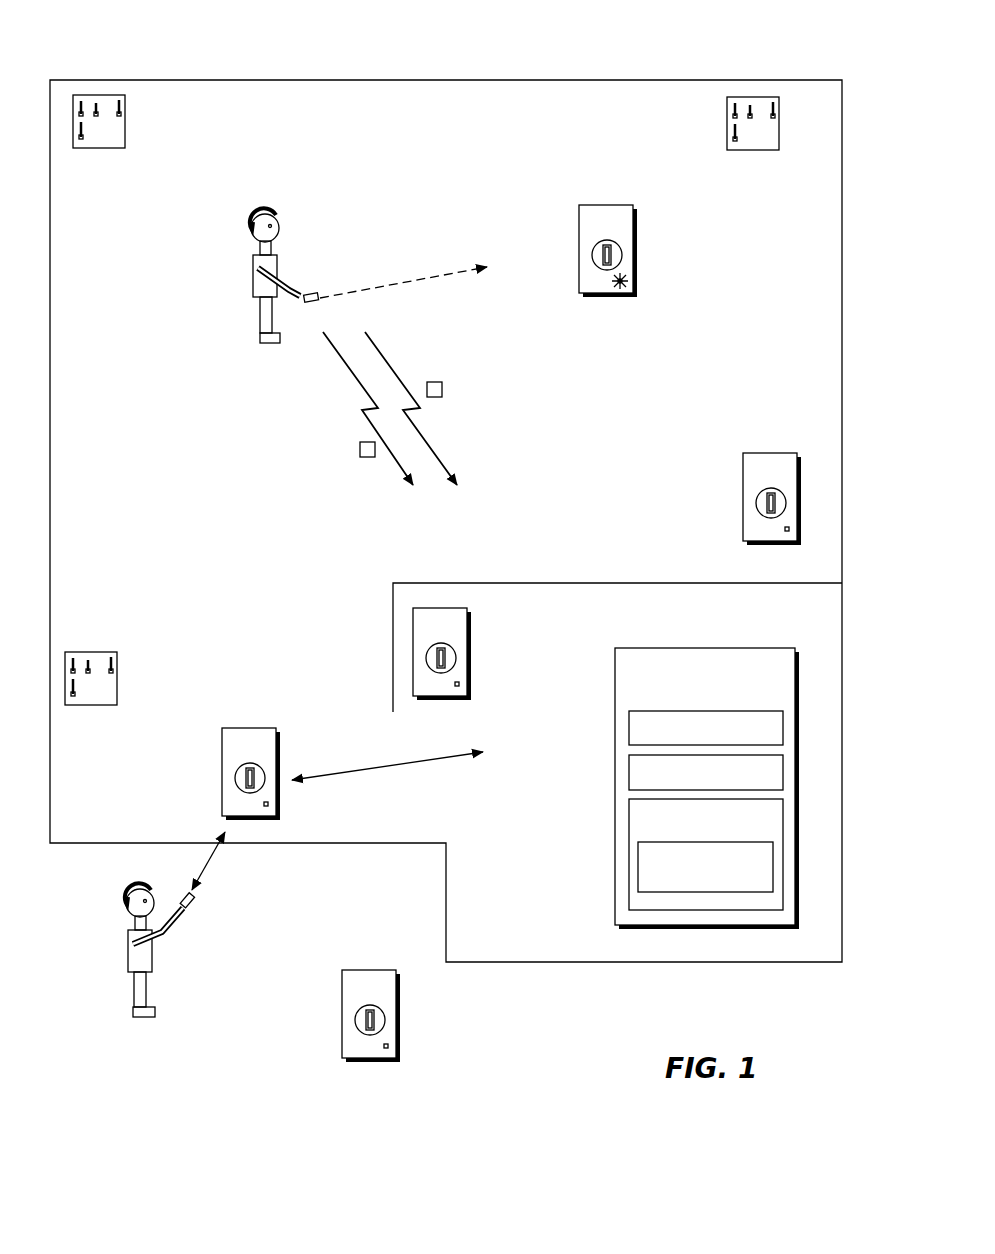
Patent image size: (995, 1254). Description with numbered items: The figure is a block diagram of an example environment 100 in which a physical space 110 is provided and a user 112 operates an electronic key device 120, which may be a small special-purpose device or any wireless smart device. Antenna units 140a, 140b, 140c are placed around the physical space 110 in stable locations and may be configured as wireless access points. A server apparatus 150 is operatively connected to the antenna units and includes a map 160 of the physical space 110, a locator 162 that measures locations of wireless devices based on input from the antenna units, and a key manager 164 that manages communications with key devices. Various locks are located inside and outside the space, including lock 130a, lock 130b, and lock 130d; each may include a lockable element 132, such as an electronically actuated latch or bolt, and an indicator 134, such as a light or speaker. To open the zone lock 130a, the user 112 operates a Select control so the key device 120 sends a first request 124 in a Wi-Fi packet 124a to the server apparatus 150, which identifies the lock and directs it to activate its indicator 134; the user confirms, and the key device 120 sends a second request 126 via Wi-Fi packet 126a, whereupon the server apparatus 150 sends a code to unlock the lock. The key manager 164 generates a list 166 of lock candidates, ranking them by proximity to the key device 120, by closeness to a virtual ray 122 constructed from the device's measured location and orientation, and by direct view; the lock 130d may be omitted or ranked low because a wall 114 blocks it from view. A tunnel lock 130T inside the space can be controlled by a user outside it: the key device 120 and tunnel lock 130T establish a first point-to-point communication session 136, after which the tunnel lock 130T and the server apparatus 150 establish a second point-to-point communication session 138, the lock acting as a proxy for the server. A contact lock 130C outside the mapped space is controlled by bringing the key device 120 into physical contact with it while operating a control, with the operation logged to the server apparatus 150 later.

The environment 100 is at (770, 58).
The physical space 110 is at (469, 124).
The user 112 is at (244, 271).
The wall 114 is at (636, 583).
The electronic key device 120 is at (308, 292).
The virtual ray 122 is at (408, 275).
The first request 124 is at (390, 349).
The Wi-Fi packet 124a is at (443, 389).
The second request 126 is at (354, 386).
The Wi-Fi packet 126a is at (359, 450).
The lock 130a is at (587, 232).
The lock 130b is at (751, 480).
The contact lock 130C is at (350, 997).
The lock 130d is at (421, 635).
The tunnel lock 130T is at (230, 755).
The lockable element 132 is at (592, 256).
The indicator 134 is at (604, 283).
The first point-to-point communication session 136 is at (218, 855).
The second point-to-point communication session 138 is at (401, 777).
The antenna unit 140a is at (131, 116).
The antenna unit 140b is at (753, 153).
The antenna unit 140c is at (128, 678).
The server apparatus 150 is at (690, 698).
The map 160 is at (706, 728).
The locator 162 is at (706, 772).
The key manager 164 is at (706, 854).
The list of lock candidates 166 is at (705, 867).